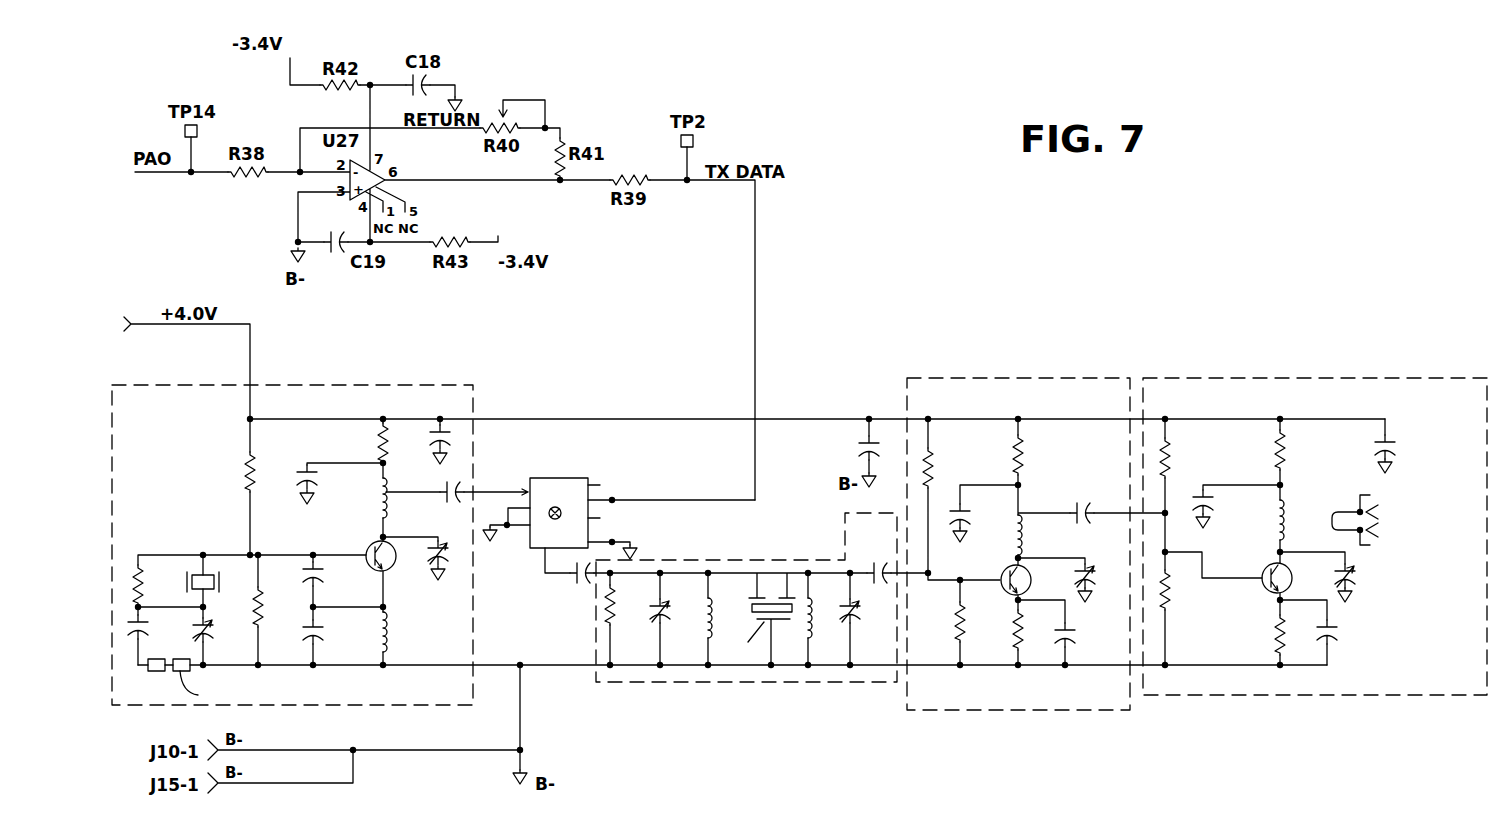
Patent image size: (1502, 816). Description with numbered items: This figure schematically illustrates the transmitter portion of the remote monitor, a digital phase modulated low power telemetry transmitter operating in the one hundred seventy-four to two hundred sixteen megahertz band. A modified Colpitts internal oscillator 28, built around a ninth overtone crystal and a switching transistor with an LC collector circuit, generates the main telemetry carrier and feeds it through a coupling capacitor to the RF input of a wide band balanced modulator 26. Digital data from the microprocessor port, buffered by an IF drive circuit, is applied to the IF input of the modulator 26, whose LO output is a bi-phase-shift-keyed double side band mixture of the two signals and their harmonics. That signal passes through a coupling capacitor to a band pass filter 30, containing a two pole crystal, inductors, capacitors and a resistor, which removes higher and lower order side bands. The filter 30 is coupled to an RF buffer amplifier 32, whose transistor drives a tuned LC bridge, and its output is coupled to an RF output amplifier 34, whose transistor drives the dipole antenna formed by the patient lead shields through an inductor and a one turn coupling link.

The wide band balanced modulator 26 is at (553, 478).
The internal oscillator 28 is at (348, 385).
The band pass filter 30 is at (740, 560).
The RF buffer amplifier 32 is at (1057, 378).
The RF output amplifier 34 is at (1275, 378).